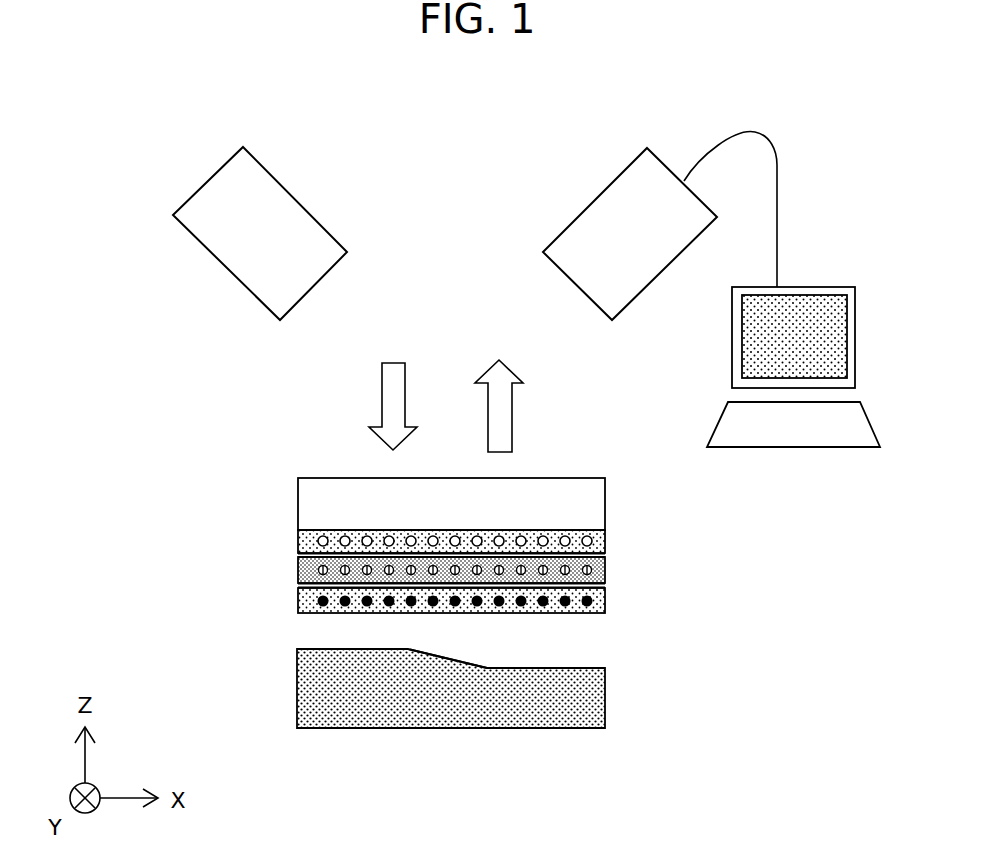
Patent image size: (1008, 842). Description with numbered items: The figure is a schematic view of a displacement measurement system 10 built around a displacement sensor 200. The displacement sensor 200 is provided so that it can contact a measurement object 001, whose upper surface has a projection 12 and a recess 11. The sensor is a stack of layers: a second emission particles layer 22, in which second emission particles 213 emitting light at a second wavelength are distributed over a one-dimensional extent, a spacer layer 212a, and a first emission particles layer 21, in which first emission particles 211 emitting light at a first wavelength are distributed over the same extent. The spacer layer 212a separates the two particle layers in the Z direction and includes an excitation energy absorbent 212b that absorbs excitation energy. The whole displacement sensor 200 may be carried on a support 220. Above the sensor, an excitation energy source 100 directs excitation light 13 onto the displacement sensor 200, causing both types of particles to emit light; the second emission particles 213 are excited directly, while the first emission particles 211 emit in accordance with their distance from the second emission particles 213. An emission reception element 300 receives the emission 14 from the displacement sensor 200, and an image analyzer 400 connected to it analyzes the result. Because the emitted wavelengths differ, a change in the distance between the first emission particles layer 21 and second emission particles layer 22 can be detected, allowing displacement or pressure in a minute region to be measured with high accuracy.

The displacement measurement system 10 is at (448, 82).
The excitation energy source 100 is at (312, 218).
The emission reception element 300 is at (578, 215).
The image analyzer 400 is at (810, 285).
The excitation light 13 is at (380, 397).
The emission 14 is at (512, 407).
The displacement sensor 200 is at (452, 547).
The support 220 is at (605, 503).
The second emission particles layer 22 is at (479, 526).
The second emission particles 213 is at (597, 540).
The spacer layer 212a is at (605, 570).
The excitation energy absorbent 212b is at (605, 582).
The first emission particles layer 21 is at (479, 610).
The first emission particles 211 is at (597, 602).
The measurement object 001 is at (605, 670).
The projection 12 is at (327, 648).
The recess 11 is at (552, 668).